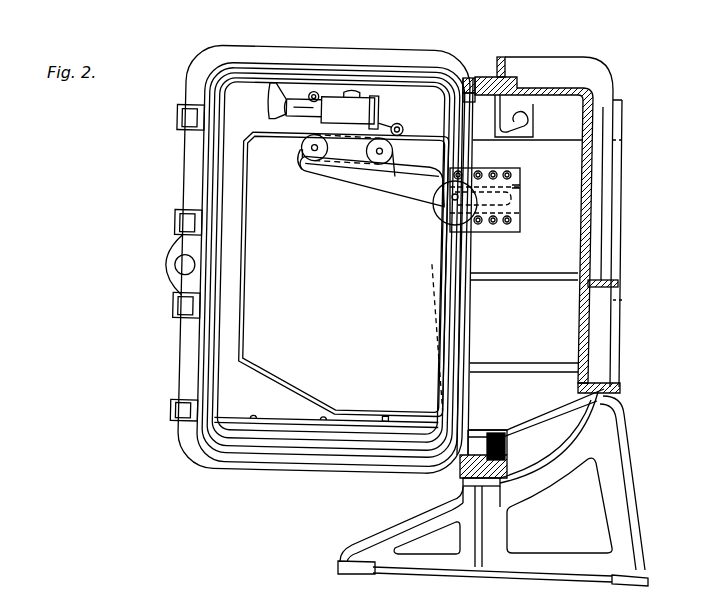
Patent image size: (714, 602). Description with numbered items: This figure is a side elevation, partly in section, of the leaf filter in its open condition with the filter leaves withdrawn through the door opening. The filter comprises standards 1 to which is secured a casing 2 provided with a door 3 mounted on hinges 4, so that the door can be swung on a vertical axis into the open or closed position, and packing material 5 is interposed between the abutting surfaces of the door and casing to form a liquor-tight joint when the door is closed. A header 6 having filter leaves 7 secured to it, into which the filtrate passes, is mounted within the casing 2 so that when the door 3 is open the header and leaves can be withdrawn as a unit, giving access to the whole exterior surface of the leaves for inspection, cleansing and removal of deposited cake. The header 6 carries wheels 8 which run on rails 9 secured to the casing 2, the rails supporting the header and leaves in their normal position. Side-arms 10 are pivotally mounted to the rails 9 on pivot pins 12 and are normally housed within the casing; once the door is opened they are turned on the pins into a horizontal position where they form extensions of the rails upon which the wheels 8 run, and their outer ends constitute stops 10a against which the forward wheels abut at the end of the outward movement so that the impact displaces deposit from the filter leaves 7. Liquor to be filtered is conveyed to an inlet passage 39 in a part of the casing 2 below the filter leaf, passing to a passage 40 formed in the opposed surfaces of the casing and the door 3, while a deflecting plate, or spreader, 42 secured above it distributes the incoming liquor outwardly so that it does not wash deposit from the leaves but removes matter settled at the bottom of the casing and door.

The standards 1 is at (545, 490).
The casing 2 is at (545, 247).
The door 3 is at (207, 62).
The hinges 4 is at (475, 147).
The packing material 5 is at (293, 79).
The header 6 is at (335, 109).
The filter leaves 7 is at (343, 274).
The wheels 8 is at (298, 169).
The rails 9 is at (520, 192).
The side-arms 10 is at (356, 183).
The stops 10a is at (297, 146).
The pivot pin 12 is at (452, 198).
The inlet passage 39 is at (505, 455).
The passage 40 is at (447, 469).
The deflecting plate, or spreader 42 is at (244, 419).